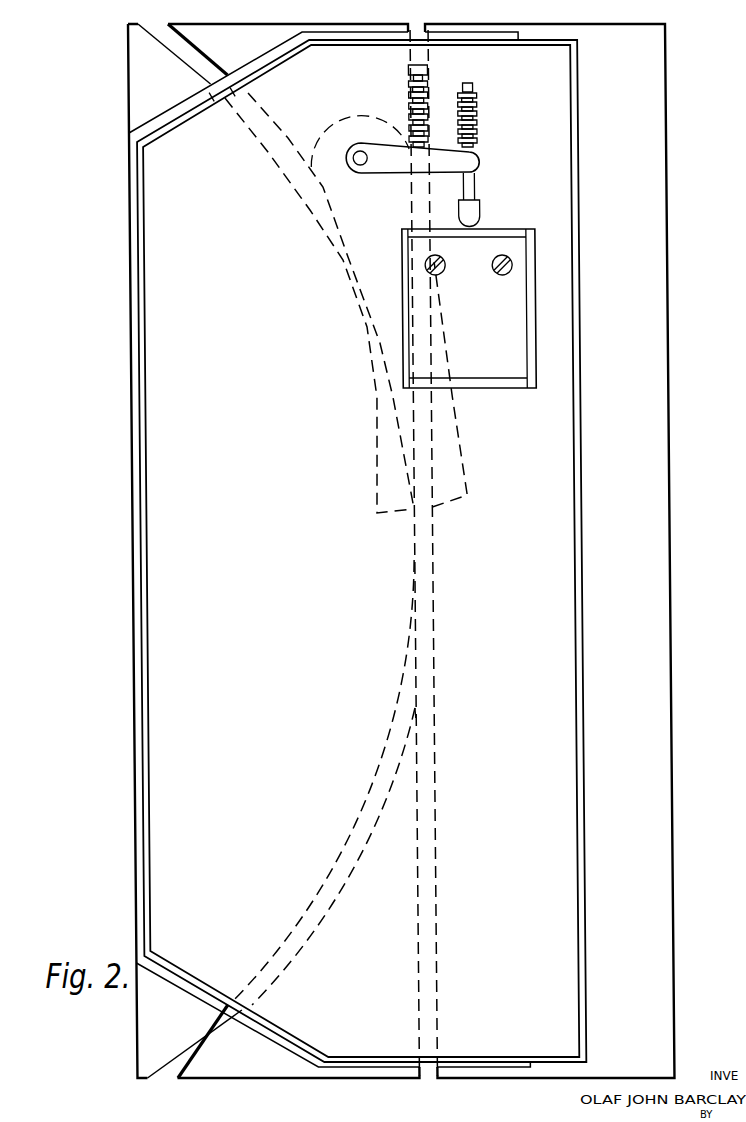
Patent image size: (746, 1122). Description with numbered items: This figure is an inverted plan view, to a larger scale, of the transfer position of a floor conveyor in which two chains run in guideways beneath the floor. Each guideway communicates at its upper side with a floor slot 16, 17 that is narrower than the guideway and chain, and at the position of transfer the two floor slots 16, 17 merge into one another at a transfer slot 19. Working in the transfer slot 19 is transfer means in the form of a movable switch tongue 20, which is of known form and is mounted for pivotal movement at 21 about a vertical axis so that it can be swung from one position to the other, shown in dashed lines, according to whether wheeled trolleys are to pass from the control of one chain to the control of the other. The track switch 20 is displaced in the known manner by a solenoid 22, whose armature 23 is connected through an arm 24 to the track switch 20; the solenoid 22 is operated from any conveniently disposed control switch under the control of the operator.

The slot 16 is at (186, 63).
The slot 17 is at (411, 25).
The transfer slot 19 is at (424, 583).
The switch tongue 20 is at (377, 449).
The pivot 21 is at (348, 150).
The solenoid 22 is at (469, 308).
The armature 23 is at (469, 212).
The arm 24 is at (468, 163).